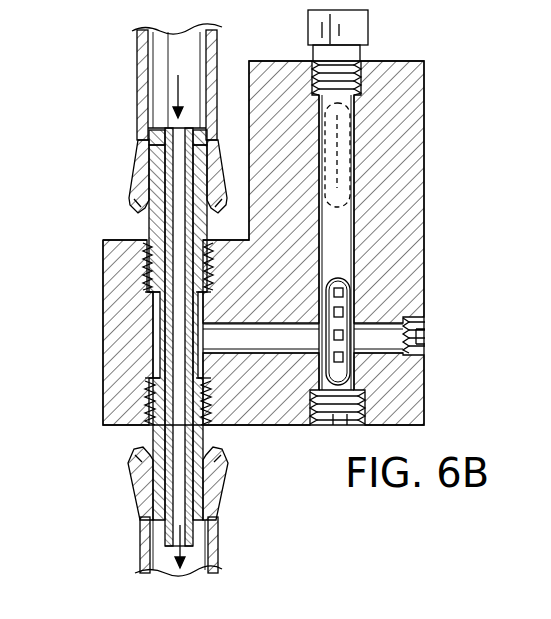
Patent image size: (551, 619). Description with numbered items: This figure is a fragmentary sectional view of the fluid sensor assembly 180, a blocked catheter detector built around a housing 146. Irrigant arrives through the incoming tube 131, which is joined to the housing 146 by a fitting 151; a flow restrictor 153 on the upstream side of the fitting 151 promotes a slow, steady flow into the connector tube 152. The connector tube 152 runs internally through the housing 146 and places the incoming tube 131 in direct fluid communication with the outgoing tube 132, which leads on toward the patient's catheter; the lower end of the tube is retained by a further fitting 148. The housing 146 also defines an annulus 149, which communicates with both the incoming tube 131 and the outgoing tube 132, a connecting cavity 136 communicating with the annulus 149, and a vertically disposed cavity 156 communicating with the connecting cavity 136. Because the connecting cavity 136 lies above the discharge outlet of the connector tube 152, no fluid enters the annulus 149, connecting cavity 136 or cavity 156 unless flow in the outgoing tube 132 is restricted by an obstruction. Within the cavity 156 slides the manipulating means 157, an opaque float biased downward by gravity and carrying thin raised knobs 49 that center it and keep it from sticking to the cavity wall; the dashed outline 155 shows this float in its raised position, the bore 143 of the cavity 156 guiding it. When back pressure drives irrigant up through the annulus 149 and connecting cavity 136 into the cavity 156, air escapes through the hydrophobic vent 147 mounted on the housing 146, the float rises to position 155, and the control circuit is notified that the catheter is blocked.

The incoming tube 131 is at (138, 98).
The flow restrictor 153 is at (137, 127).
The connector tube 152 is at (173, 185).
The fitting 151 is at (153, 224).
The fluid sensor assembly 180 is at (212, 243).
The housing 146 is at (114, 338).
The annulus 149 is at (150, 419).
The lower compression nut 148 is at (142, 442).
The outgoing tube 132 is at (222, 540).
The hydrophobic vent 147 is at (360, 32).
The manipulating means in raised position 155 is at (358, 118).
The valve bore 143 is at (295, 145).
The cavity 156 is at (345, 236).
The manipulating means 157 is at (340, 315).
The raised knobs 49 is at (430, 304).
The connecting cavity 136 is at (250, 341).